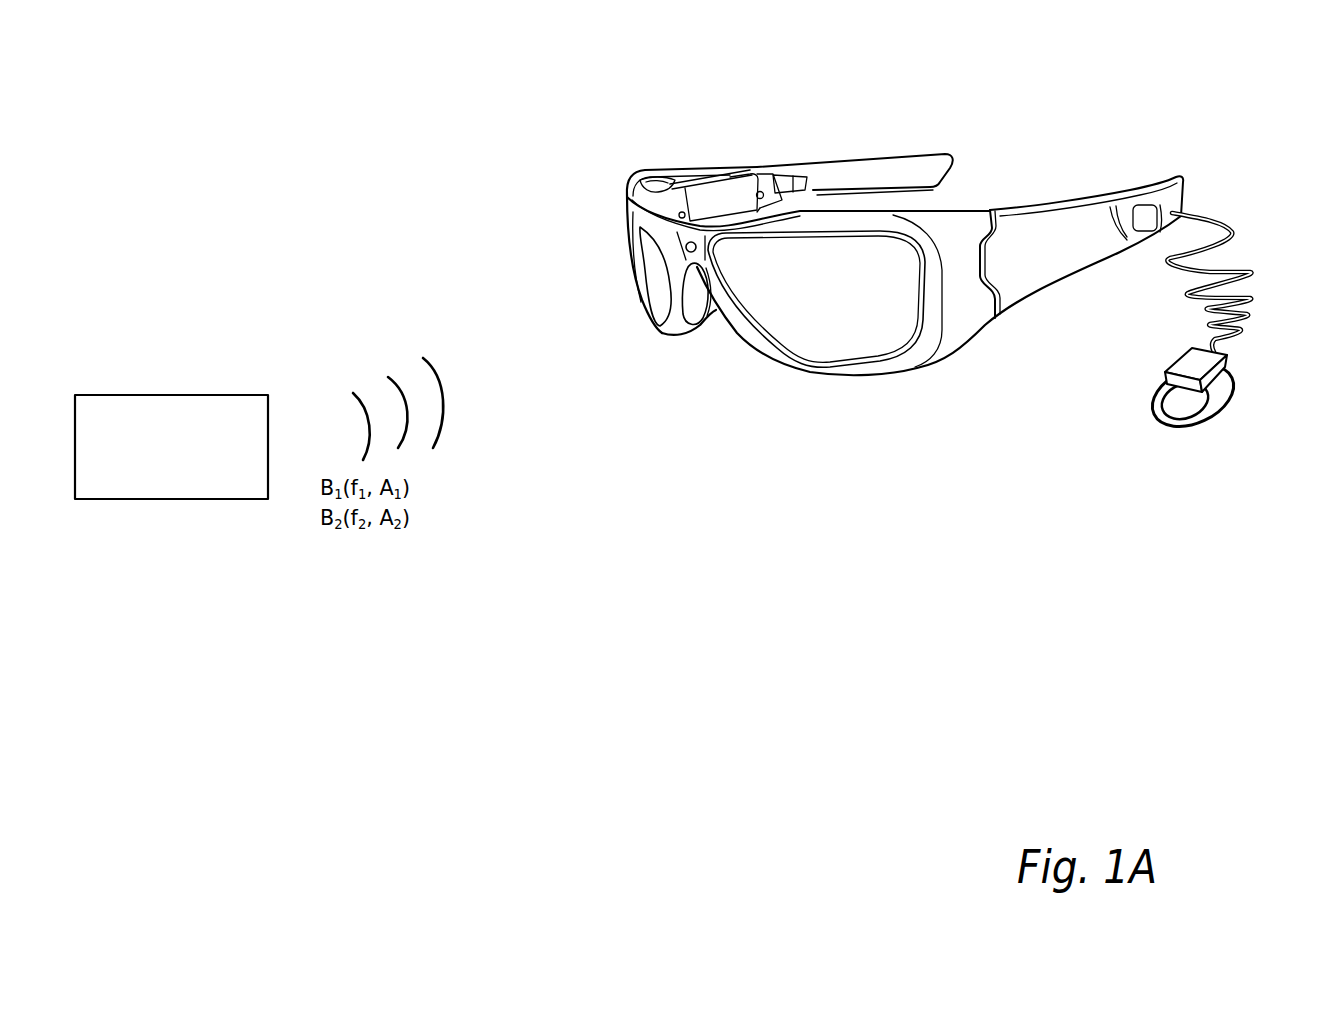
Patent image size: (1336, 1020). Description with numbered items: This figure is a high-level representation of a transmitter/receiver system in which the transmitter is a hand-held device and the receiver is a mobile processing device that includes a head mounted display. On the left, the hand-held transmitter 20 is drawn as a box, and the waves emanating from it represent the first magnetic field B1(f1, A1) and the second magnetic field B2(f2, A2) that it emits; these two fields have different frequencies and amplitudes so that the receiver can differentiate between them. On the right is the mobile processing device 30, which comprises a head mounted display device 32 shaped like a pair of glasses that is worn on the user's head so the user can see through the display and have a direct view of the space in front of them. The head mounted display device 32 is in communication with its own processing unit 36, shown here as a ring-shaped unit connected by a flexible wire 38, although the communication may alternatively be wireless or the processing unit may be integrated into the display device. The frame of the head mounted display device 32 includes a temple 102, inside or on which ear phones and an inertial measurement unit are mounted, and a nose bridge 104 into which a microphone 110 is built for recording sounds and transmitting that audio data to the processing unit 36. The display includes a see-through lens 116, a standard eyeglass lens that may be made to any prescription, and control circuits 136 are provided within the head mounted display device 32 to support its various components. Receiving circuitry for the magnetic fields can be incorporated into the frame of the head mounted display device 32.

The hand-held transmitter 20 is at (243, 486).
The mobile processing device 30 is at (1076, 141).
The head mounted display device 32 is at (950, 340).
The processing unit 36 is at (1233, 378).
The flexible wire 38 is at (1253, 275).
The temple 102 is at (857, 175).
The nose bridge 104 is at (688, 232).
The microphone 110 is at (691, 266).
The see-through lens 116 is at (663, 263).
The control circuits 136 is at (728, 193).